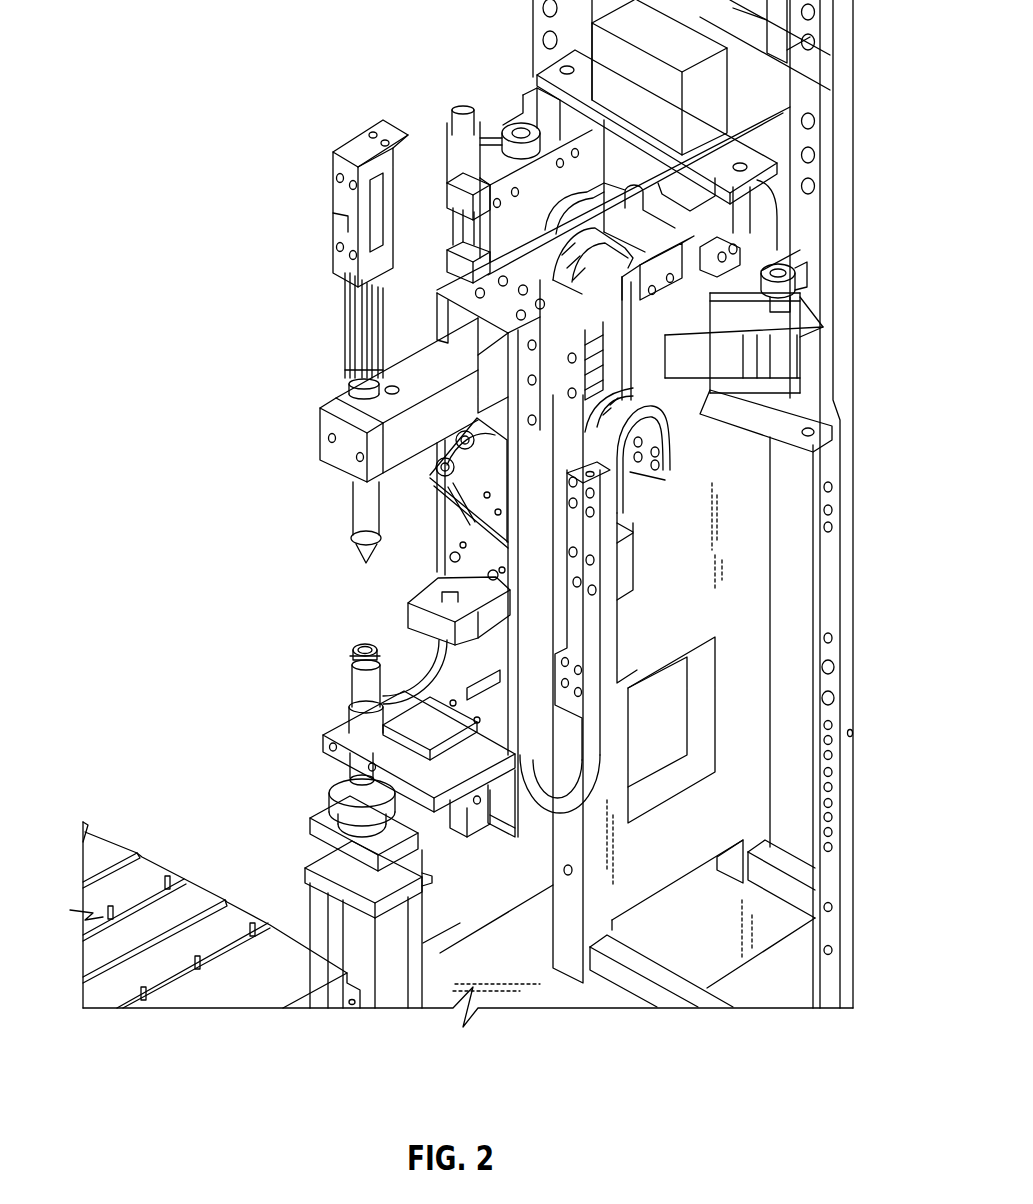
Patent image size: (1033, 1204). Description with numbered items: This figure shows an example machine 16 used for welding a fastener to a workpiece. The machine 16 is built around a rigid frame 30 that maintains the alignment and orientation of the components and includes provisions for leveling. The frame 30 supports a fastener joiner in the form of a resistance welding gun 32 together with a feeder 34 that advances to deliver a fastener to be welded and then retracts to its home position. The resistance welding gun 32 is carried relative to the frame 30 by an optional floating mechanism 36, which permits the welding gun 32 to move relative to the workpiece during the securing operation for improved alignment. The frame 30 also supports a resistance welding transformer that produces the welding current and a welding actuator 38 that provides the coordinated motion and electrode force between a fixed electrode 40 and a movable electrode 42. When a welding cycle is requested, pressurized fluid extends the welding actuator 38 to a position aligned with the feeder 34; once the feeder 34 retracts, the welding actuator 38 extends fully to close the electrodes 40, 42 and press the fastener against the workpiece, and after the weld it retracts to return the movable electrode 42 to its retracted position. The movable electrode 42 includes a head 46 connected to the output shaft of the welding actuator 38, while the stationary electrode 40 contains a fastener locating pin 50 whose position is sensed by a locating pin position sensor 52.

The machine 16 is at (253, 68).
The frame 30 is at (755, 600).
The resistance welding gun 32 is at (305, 423).
The feeder 34 is at (422, 552).
The floating mechanism 36 is at (818, 312).
The welding actuator 38 is at (310, 900).
The electrode 40 is at (352, 508).
The electrode 42 is at (350, 690).
The head 46 is at (363, 645).
The fastener locating pin 50 is at (365, 565).
The locating pin position sensor 52 is at (350, 326).